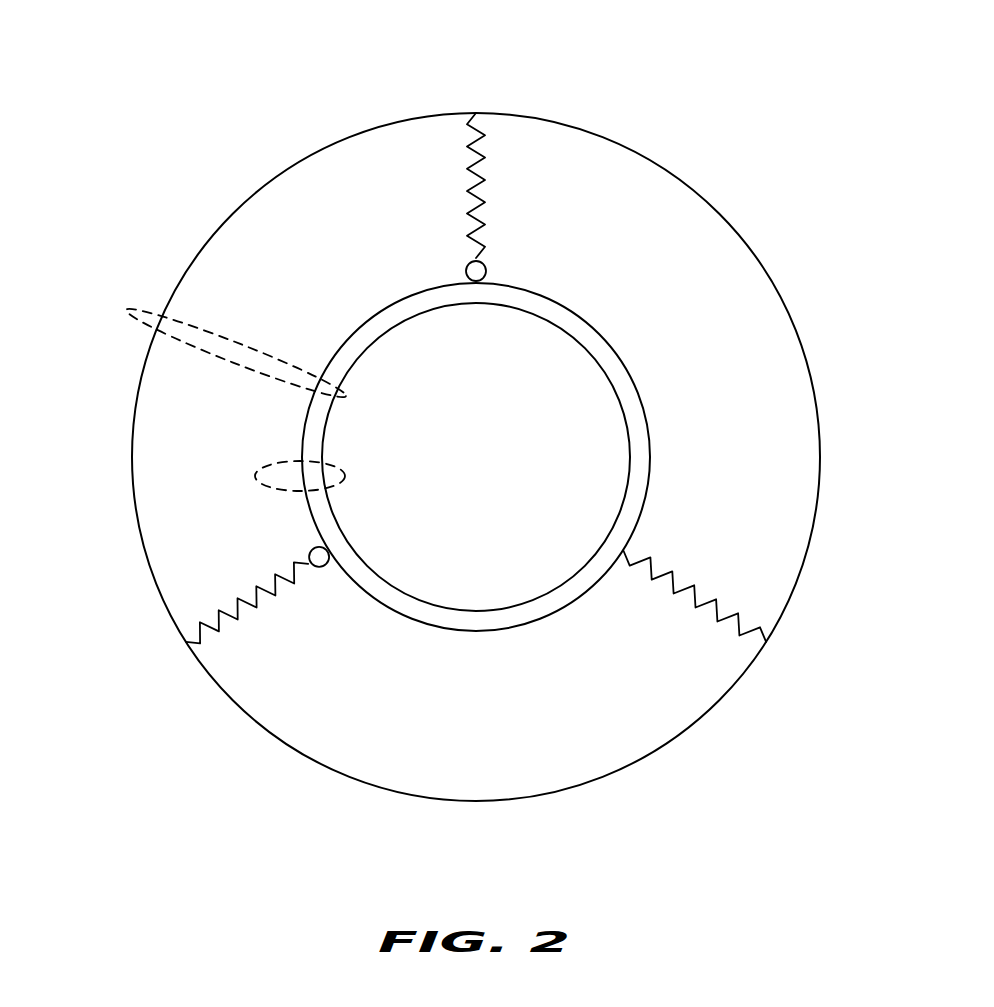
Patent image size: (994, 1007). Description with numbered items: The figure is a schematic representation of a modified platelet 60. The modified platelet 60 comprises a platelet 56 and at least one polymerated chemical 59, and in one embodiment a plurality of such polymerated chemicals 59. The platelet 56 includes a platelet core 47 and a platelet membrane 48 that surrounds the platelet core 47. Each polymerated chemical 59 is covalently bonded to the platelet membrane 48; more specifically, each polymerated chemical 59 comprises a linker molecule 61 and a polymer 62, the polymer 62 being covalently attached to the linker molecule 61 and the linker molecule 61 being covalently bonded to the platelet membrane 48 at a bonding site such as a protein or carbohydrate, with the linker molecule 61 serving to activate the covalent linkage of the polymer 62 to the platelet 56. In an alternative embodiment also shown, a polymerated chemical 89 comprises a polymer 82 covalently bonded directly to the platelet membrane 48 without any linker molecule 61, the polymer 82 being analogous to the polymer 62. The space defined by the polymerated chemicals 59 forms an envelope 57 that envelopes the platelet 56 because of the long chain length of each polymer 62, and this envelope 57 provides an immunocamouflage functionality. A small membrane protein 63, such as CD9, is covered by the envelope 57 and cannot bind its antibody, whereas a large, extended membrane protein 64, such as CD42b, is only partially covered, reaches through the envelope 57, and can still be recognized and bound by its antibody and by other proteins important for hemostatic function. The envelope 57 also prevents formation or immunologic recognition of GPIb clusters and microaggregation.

The platelet core 47 is at (458, 471).
The platelet membrane 48 is at (483, 625).
The platelet 56 is at (652, 356).
The envelope 57 is at (806, 418).
The polymerated chemical 59 is at (454, 228).
The modified platelet 60 is at (476, 96).
The linker molecule 61 is at (488, 271).
The polymer 62 is at (483, 183).
The small membrane protein 63 is at (256, 476).
The large, extended membrane protein 64 is at (126, 308).
The polymer 82 is at (696, 607).
The polymerated chemical 89 is at (685, 570).